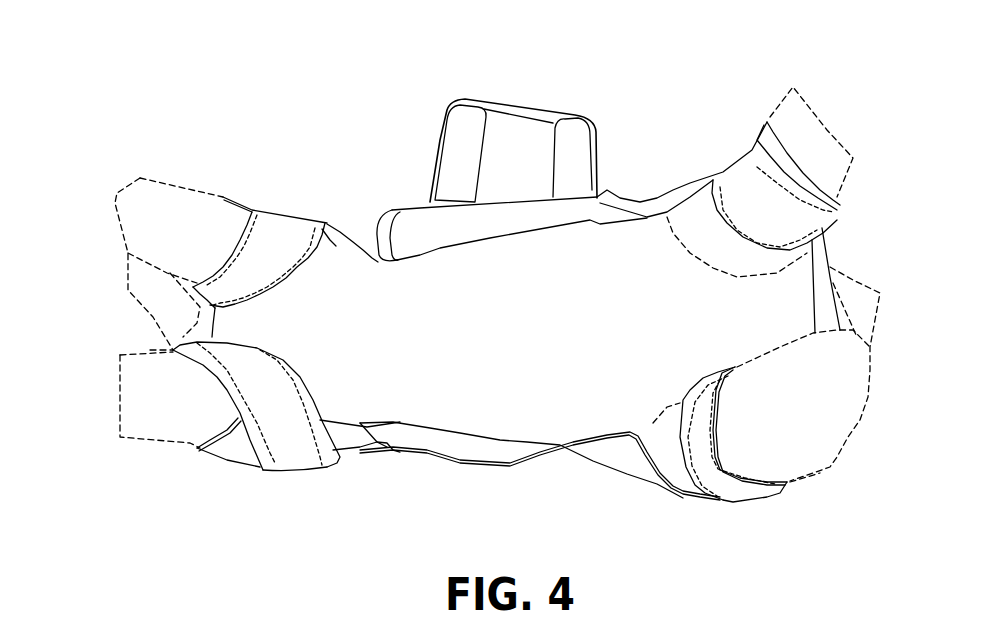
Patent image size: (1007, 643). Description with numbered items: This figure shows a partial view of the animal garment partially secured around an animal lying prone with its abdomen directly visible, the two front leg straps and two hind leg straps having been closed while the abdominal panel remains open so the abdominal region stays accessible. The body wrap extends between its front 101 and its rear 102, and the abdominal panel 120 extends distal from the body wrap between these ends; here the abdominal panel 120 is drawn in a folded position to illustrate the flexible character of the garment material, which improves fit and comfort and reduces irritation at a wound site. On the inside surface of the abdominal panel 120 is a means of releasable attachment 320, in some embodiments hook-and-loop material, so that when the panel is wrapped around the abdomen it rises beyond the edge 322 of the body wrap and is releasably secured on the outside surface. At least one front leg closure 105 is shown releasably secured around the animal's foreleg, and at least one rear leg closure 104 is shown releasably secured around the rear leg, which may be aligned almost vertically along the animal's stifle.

The front of body wrap 101 is at (880, 355).
The rear of body wrap 102 is at (145, 330).
The rear leg closure 104 is at (290, 215).
The front leg closure 105 is at (810, 220).
The abdominal panel 120 is at (535, 103).
The means of releasable attachment 320 is at (458, 149).
The edge of body wrap 322 is at (503, 462).